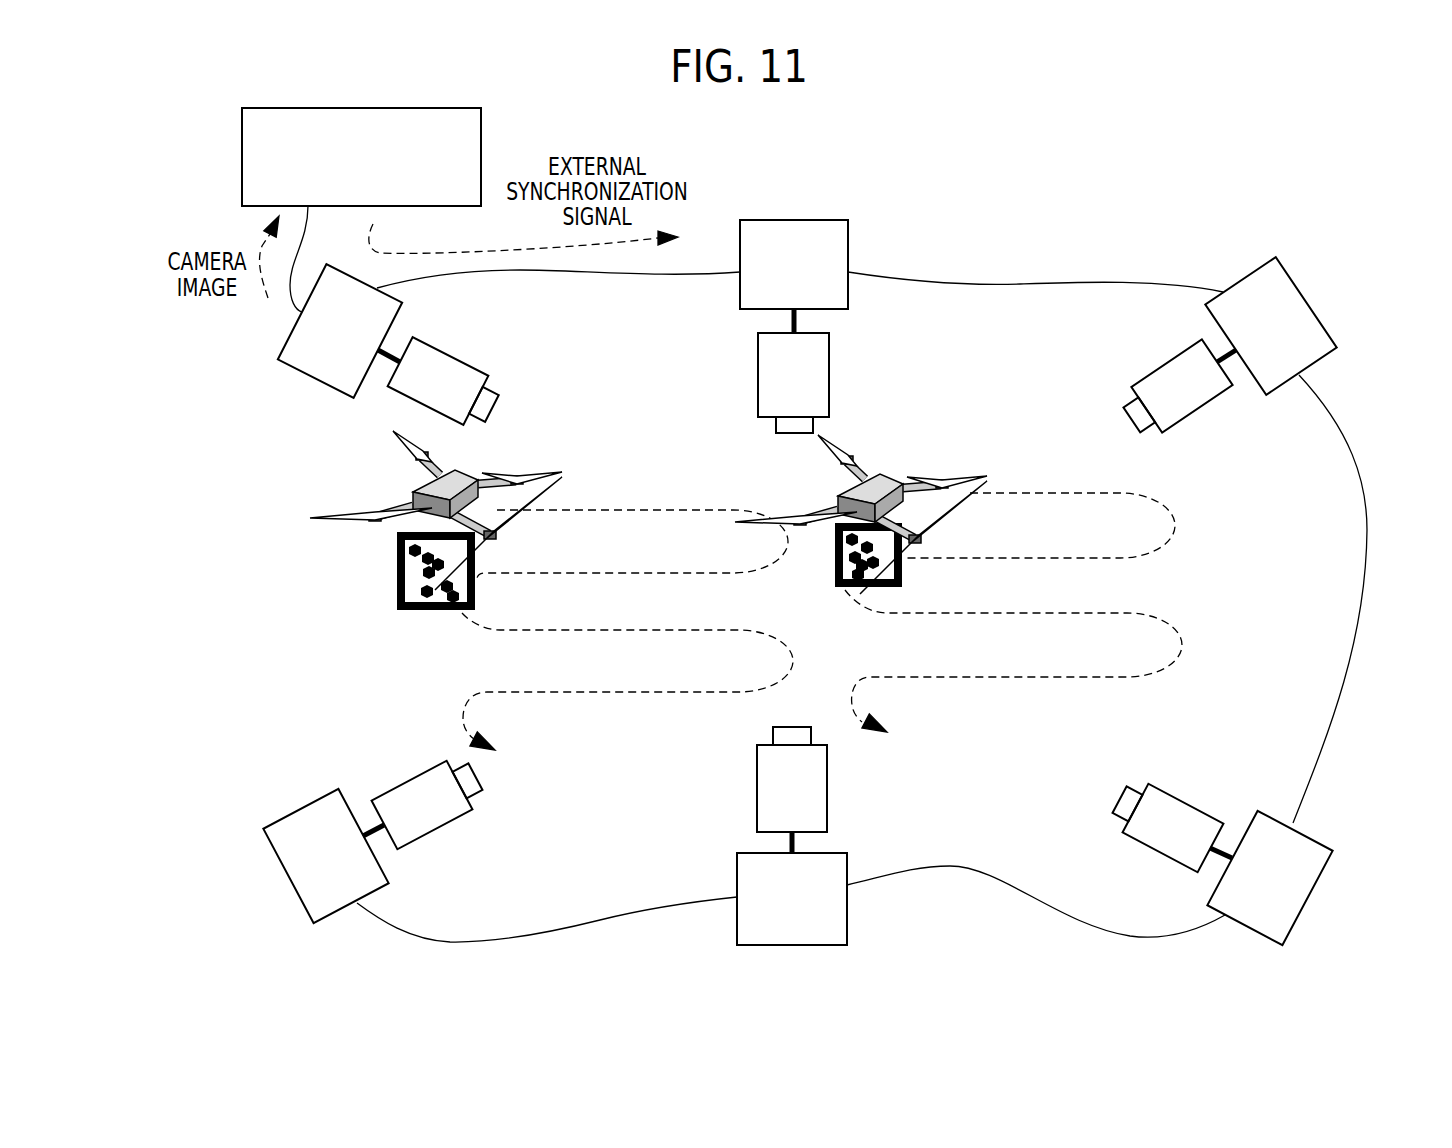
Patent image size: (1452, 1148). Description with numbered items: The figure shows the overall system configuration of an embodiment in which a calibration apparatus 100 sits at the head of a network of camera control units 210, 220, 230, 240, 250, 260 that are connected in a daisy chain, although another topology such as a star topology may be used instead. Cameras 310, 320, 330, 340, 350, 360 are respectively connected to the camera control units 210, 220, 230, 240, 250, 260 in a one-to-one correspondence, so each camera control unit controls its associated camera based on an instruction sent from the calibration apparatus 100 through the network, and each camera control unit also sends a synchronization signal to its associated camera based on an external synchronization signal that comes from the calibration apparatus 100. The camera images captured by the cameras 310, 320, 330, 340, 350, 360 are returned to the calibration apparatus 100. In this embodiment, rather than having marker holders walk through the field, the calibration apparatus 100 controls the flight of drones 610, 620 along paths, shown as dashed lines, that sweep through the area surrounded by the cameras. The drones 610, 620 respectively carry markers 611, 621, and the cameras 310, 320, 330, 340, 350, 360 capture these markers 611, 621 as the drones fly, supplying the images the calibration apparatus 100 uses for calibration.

The calibration apparatus 100 is at (481, 118).
The camera control unit 210 is at (283, 353).
The camera control unit 220 is at (794, 220).
The camera control unit 230 is at (1248, 276).
The camera control unit 240 is at (1318, 873).
The camera control unit 250 is at (737, 862).
The camera control unit 260 is at (300, 808).
The camera 310 is at (456, 359).
The camera 320 is at (829, 372).
The camera 330 is at (1148, 375).
The camera 340 is at (1195, 807).
The camera 350 is at (757, 772).
The camera 360 is at (388, 792).
The drone 610 is at (407, 477).
The marker 611 is at (397, 592).
The drone 620 is at (833, 480).
The marker 621 is at (835, 577).